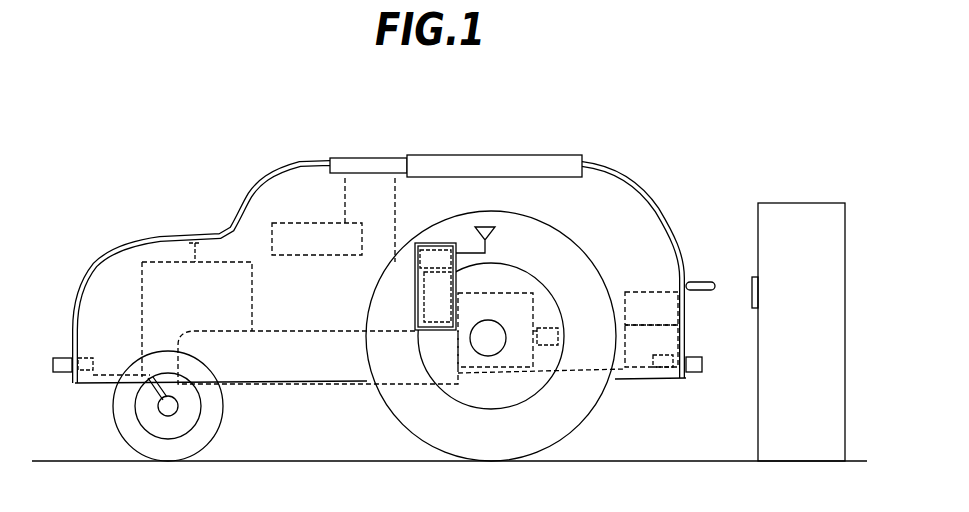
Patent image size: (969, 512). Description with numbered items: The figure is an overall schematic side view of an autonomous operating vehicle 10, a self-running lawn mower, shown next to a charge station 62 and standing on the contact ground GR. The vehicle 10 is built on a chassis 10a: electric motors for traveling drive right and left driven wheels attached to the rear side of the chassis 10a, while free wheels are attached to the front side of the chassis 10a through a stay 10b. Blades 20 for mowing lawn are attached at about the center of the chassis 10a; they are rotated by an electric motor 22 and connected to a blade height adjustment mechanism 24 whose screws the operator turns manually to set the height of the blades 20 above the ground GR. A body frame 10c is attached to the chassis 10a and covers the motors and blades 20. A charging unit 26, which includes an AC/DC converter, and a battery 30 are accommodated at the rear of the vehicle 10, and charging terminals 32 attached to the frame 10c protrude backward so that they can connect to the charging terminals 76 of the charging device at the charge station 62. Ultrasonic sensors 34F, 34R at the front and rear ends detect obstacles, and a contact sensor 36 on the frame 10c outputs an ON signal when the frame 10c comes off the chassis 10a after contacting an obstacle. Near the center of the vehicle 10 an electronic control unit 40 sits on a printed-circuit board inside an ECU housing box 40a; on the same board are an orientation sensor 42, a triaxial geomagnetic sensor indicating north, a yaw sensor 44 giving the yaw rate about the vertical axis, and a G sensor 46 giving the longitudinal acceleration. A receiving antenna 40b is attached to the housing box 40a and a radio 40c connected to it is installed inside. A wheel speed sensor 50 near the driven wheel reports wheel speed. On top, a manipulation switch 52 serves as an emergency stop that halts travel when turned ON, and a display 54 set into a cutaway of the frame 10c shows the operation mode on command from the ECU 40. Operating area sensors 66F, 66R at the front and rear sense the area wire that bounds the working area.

The autonomous operating vehicle 10 is at (636, 166).
The chassis 10a is at (626, 380).
The stay 10b is at (152, 395).
The body frame 10c is at (147, 237).
The blades 20 is at (296, 366).
The electric motor 22 is at (317, 306).
The blade height adjustment mechanism 24 is at (329, 250).
The charging unit 26 is at (663, 320).
The battery 30 is at (663, 353).
The charging terminals 32 is at (703, 282).
The ultrasonic sensor 34F is at (60, 358).
The ultrasonic sensor 34R is at (693, 357).
The contact sensor 36 is at (202, 246).
The electronic control unit 40 is at (457, 283).
The ECU housing box 40a is at (456, 312).
The receiving antenna 40b is at (488, 225).
The radio 40c is at (437, 243).
The orientation sensor 42 is at (419, 268).
The yaw sensor 44 is at (422, 304).
The G sensor 46 is at (422, 332).
The wheel speed sensor 50 is at (556, 328).
The manipulation switch 52 is at (372, 157).
The display 54 is at (497, 155).
The charge station 62 is at (813, 343).
The operating area sensor 66F is at (93, 358).
The operating area sensor 66R is at (673, 368).
The charging terminals 76 is at (752, 290).
The contact ground GR is at (625, 460).